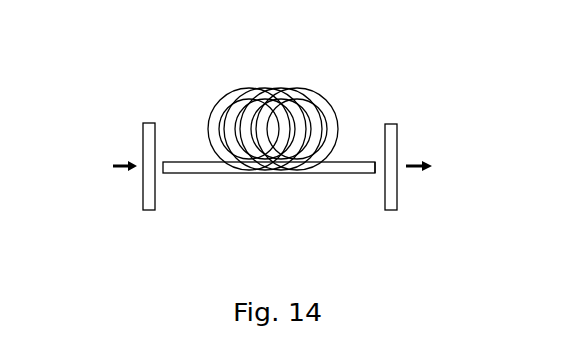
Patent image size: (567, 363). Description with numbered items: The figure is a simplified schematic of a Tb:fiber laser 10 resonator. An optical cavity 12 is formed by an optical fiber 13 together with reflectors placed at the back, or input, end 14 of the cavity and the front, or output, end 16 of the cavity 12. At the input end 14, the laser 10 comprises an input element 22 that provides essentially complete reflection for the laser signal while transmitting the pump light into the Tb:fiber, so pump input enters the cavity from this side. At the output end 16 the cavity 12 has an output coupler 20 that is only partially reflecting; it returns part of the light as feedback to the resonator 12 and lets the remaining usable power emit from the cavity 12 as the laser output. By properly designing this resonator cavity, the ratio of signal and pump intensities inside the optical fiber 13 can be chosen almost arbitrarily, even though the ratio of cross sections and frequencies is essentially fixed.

The laser 10 is at (110, 53).
The optical cavity 12 is at (152, 74).
The optical fiber 13 is at (229, 101).
The input end 14 is at (167, 160).
The output end 16 is at (377, 176).
The output coupler 20 is at (390, 123).
The input element 22 is at (154, 210).